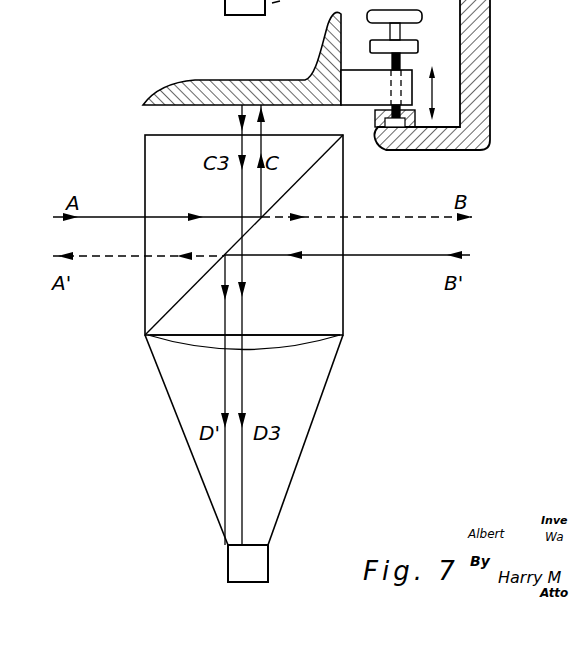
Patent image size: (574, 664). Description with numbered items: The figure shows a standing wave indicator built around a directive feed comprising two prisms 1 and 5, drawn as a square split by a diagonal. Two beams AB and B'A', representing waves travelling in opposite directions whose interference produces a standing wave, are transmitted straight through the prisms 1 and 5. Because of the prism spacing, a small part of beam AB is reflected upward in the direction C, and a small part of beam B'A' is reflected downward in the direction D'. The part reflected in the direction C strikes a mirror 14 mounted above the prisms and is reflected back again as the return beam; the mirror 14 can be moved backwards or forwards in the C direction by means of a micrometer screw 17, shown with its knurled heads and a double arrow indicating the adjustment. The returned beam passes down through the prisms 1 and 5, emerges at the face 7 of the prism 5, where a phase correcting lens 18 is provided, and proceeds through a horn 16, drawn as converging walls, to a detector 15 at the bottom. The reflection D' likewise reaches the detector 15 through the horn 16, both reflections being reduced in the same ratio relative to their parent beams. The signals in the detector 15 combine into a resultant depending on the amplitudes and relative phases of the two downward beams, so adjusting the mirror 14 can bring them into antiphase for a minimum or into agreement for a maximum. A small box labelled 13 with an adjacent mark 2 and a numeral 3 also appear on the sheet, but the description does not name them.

The prism 1 is at (186, 198).
The housing 2 is at (275, 5).
The beam splitter cube 3 is at (208, 135).
The prism 5 is at (316, 301).
The face of the prism 7 is at (268, 334).
The light source 13 is at (245, 8).
The mirror 14 is at (152, 106).
The detector 15 is at (258, 578).
The horn 16 is at (176, 410).
The micrometer screw 17 is at (406, 69).
The phase correcting lens 18 is at (269, 341).